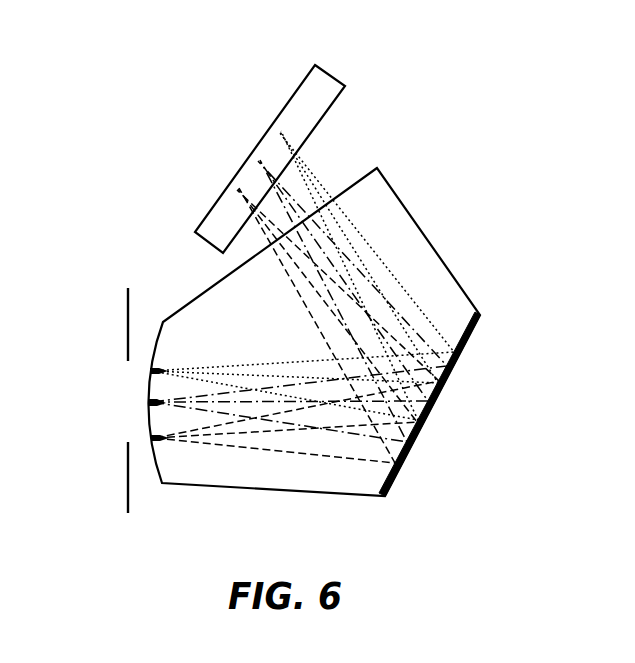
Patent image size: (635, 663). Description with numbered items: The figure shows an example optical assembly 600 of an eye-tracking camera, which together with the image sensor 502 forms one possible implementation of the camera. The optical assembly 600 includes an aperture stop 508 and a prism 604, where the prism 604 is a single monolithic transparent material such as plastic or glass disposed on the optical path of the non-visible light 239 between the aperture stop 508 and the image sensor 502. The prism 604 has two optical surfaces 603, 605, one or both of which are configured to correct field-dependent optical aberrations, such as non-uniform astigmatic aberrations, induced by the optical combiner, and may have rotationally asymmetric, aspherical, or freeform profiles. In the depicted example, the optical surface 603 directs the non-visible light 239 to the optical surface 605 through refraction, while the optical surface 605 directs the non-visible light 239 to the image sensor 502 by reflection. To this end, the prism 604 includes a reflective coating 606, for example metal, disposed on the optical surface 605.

The optical assembly 600 is at (546, 125).
The image sensor 502 is at (322, 85).
The aperture stop 508 is at (128, 288).
The non-visible light 239 is at (152, 403).
The optical surface 603 is at (132, 387).
The prism 604 is at (405, 228).
The optical surface 605 is at (452, 319).
The reflective coating 606 is at (462, 353).